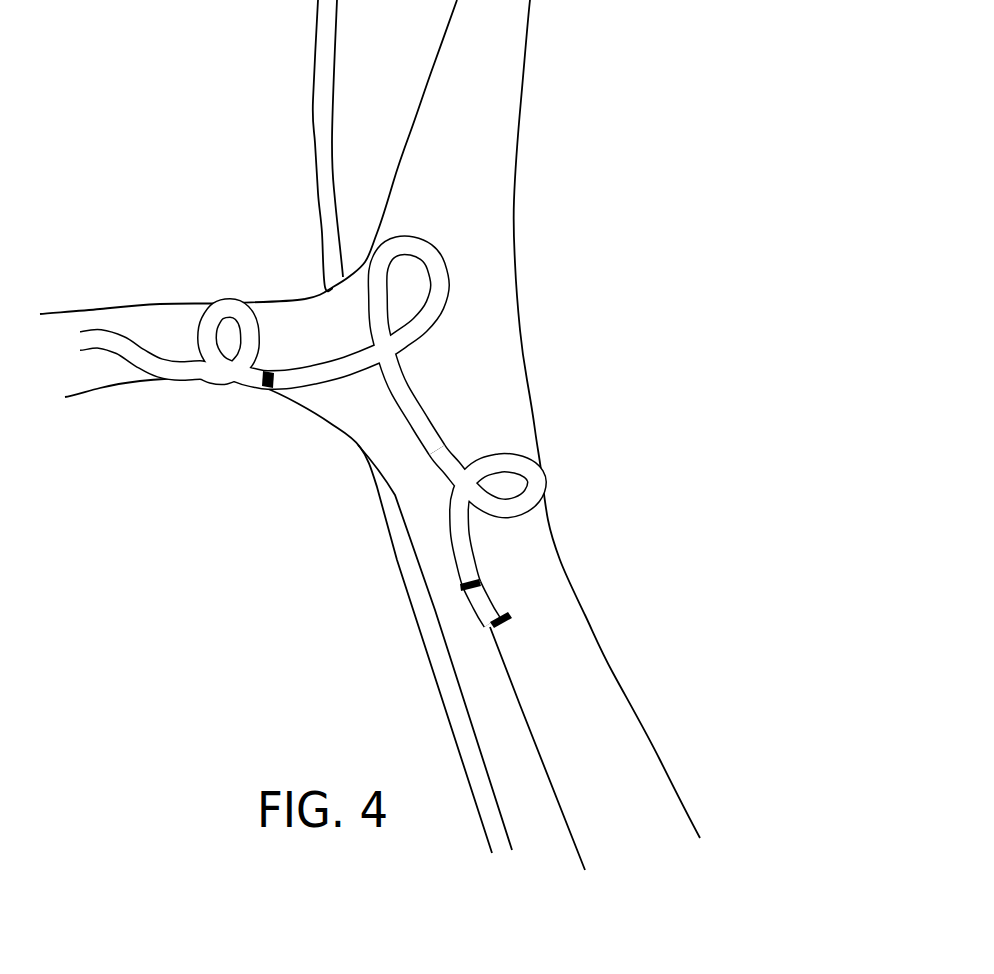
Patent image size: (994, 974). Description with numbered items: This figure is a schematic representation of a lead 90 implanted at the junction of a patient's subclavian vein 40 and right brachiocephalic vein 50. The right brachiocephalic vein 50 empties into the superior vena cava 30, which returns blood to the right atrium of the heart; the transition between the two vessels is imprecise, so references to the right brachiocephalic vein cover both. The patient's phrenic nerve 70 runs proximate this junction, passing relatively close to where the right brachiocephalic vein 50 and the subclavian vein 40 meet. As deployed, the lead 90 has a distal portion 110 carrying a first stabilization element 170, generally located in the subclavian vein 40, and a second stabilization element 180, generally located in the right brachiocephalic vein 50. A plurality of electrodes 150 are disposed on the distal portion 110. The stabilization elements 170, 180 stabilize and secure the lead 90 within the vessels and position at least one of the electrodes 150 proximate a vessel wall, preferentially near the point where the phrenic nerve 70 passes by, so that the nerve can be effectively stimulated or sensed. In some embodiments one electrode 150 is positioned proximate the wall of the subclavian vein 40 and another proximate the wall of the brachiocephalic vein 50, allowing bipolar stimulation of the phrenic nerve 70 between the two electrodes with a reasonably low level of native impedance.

The superior vena cava 30 is at (597, 733).
The subclavian vein 40 is at (139, 323).
The right brachiocephalic vein 50 is at (500, 430).
The phrenic nerve 70 is at (333, 143).
The lead 90 is at (287, 383).
The distal portion 110 is at (341, 428).
The electrodes 150 is at (510, 618).
The first stabilization element 170 is at (217, 313).
The second stabilization element 180 is at (527, 497).